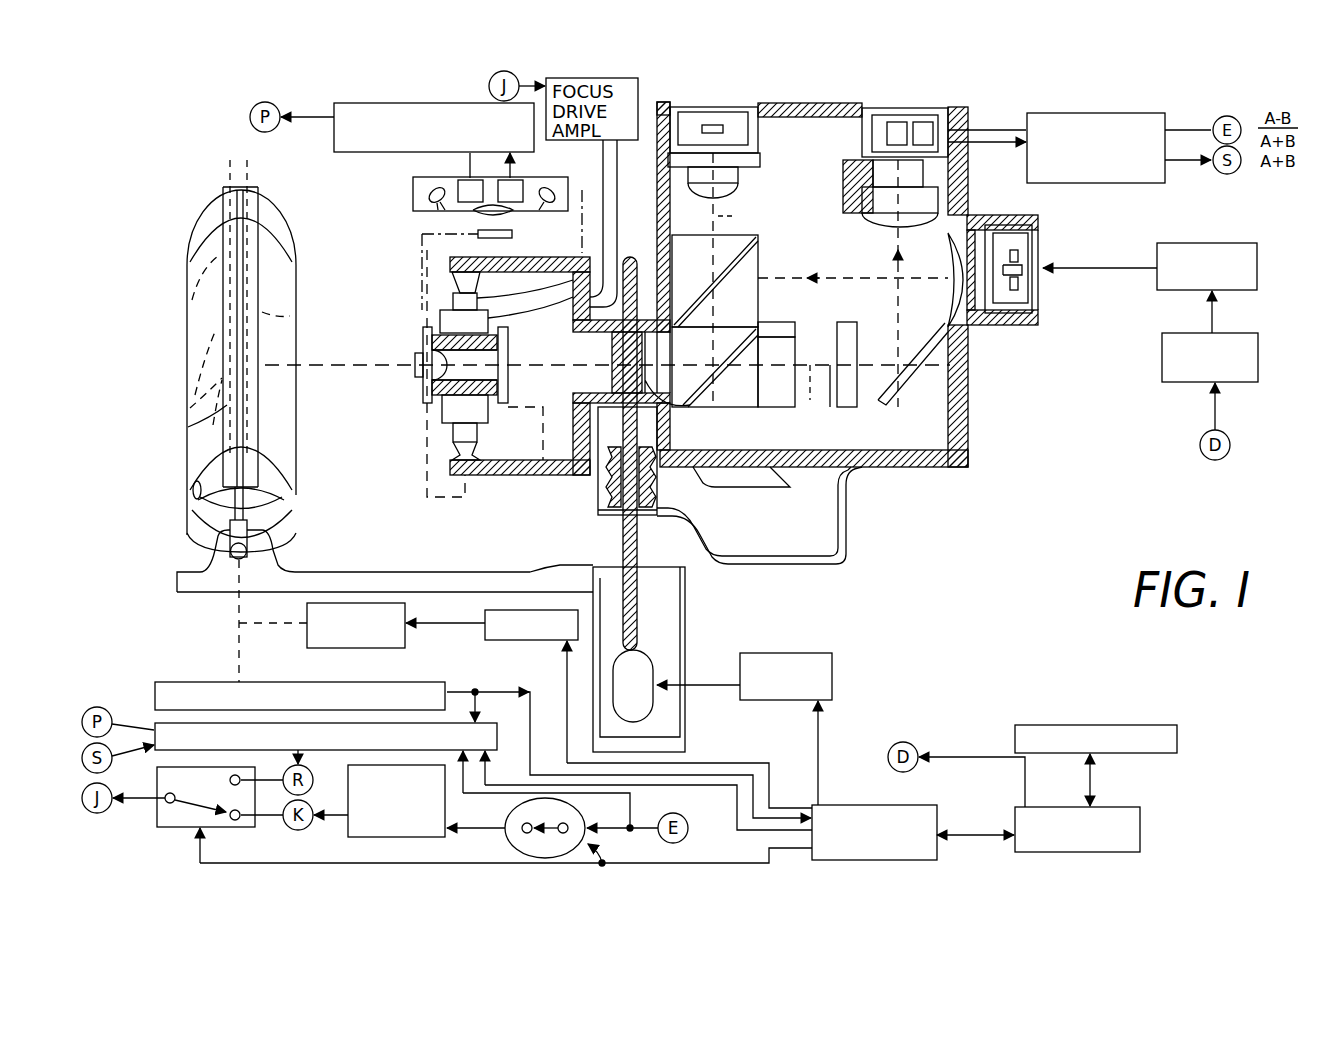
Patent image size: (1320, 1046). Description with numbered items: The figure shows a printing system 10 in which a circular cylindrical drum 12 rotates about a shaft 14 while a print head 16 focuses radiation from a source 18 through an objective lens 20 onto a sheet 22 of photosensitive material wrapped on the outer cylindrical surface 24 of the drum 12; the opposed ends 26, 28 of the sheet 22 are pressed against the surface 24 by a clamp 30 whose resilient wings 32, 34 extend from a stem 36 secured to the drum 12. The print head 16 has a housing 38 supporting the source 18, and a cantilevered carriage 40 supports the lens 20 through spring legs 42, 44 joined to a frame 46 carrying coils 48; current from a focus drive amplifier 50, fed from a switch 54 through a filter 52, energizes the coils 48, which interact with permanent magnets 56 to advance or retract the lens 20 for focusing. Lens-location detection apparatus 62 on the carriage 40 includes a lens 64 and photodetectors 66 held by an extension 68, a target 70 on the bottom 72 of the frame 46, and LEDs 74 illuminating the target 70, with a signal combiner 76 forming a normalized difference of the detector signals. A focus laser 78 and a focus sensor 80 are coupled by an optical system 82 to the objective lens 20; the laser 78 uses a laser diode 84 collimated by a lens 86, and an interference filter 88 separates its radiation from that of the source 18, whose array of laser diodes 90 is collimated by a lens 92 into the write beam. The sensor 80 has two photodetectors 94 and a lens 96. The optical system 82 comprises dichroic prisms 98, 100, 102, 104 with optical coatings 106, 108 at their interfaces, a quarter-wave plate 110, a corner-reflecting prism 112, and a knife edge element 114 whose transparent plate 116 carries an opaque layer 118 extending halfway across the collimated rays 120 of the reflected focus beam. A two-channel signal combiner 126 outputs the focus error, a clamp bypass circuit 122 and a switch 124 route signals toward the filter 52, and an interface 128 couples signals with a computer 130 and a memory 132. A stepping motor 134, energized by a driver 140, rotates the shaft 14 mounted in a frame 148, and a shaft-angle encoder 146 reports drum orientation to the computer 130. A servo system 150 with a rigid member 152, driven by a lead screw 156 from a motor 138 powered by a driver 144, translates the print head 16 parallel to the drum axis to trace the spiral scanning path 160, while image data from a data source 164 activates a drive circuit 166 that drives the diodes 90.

The printing system 10 is at (203, 178).
The circular cylindrical drum 12 is at (205, 216).
The shaft 14 is at (246, 560).
The print head 16 is at (977, 386).
The radiation source 18 is at (1040, 240).
The objective lens 20 is at (416, 370).
The sheet of photosensitive material 22 is at (192, 490).
The outer cylindrical surface 24 is at (212, 483).
The sheet end 26 is at (250, 163).
The sheet end 28 is at (228, 164).
The clamp 30 is at (212, 357).
The clamp wing 32 is at (295, 500).
The clamp wing 34 is at (220, 408).
The stem 36 is at (296, 534).
The housing 38 is at (969, 433).
The carriage 40 is at (492, 478).
The spring leg 42 is at (430, 341).
The spring leg 44 is at (509, 341).
The frame 46 is at (498, 404).
The coils 48 is at (440, 320).
The focus drive amplifier 50 is at (618, 132).
The filter 52 is at (446, 815).
The switch 54 is at (151, 815).
The permanent magnets 56 is at (453, 299).
The lens-location detection apparatus 62 is at (410, 187).
The lens 64 is at (512, 211).
The photodetectors 66 is at (440, 183).
The carriage extension 68 is at (430, 195).
The target 70 is at (512, 234).
The bottom of frame 72 is at (422, 252).
The LEDs 74 is at (430, 200).
The signal combiner 76 is at (406, 103).
The focus laser 78 is at (710, 107).
The focus sensor 80 is at (946, 108).
The optical system 82 is at (882, 400).
The laser diode 84 is at (724, 129).
The collimating lens 86 is at (739, 186).
The interference filter 88 is at (797, 337).
The laser diodes 90 is at (1005, 296).
The collimating lens 92 is at (953, 259).
The photodetectors 94 is at (880, 139).
The lens 96 is at (886, 223).
The dichroic prism 98 is at (713, 232).
The dichroic prism 100 is at (758, 265).
The dichroic prism 102 is at (752, 308).
The dichroic prism 104 is at (742, 410).
The optical coating 106 is at (758, 244).
The optical coating 108 is at (693, 400).
The quarter-wave plate 110 is at (677, 402).
The corner-reflecting prism 112 is at (908, 360).
The knife edge optical element 114 is at (850, 322).
The transparent plate 116 is at (845, 408).
The opaque layer 118 is at (831, 408).
The collimated rays 120 is at (811, 390).
The clamp bypass circuit 122 is at (487, 723).
The switch 124 is at (581, 814).
The two-channel signal combiner 126 is at (1036, 183).
The interface 128 is at (850, 805).
The computer 130 is at (1130, 807).
The memory 132 is at (1100, 725).
The stepping motor 134 is at (400, 648).
The stepping motor 138 is at (653, 666).
The driver 140 is at (530, 641).
The driver 144 is at (833, 668).
The shaft-angle encoder 146 is at (175, 682).
The frame 148 is at (200, 597).
The servo system 150 is at (707, 597).
The rigid member 152 is at (800, 565).
The lead screw 156 is at (623, 537).
The spiral scanning path 160 is at (190, 316).
The data source 164 is at (1241, 383).
The drive circuit 166 is at (1262, 282).